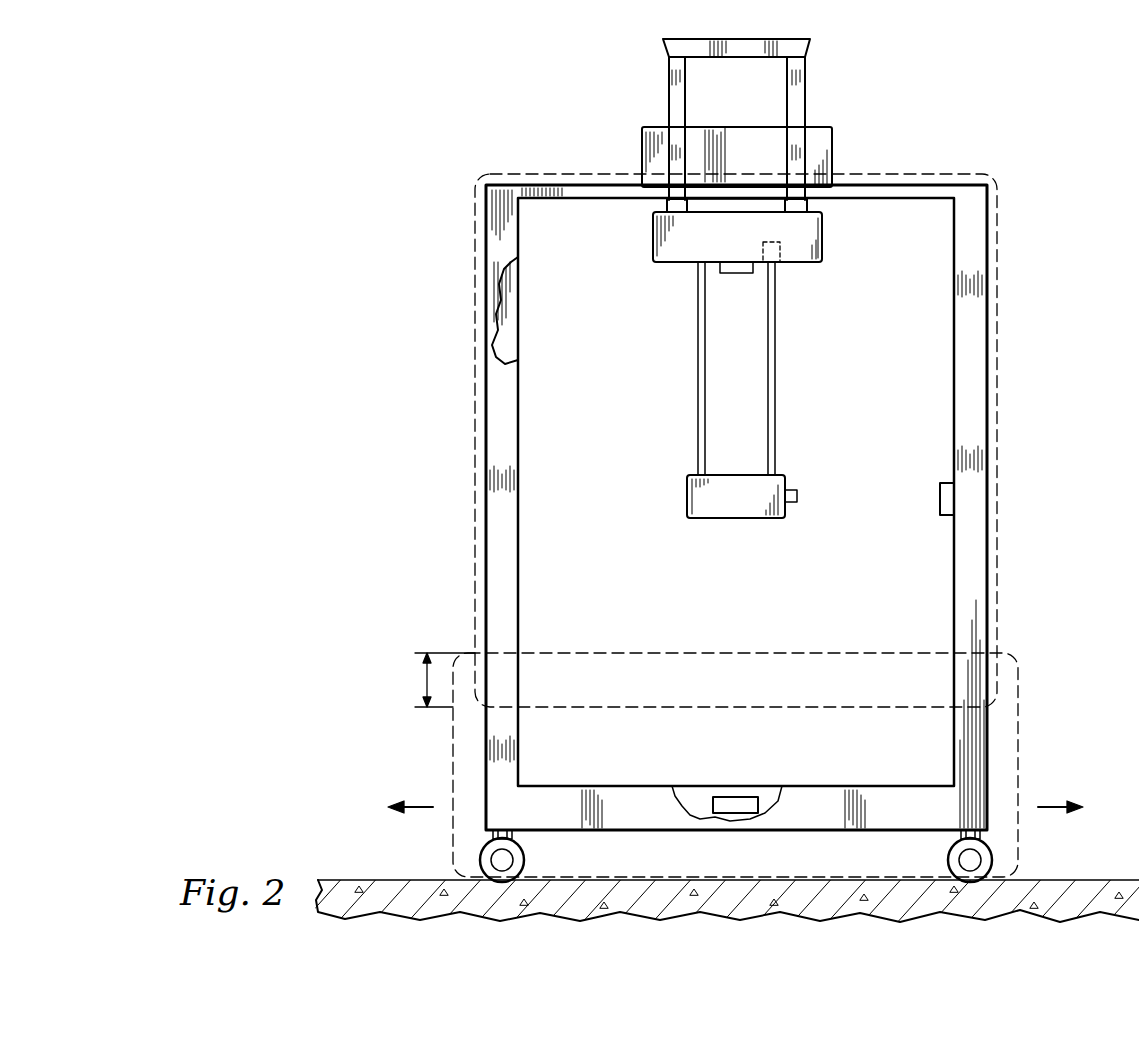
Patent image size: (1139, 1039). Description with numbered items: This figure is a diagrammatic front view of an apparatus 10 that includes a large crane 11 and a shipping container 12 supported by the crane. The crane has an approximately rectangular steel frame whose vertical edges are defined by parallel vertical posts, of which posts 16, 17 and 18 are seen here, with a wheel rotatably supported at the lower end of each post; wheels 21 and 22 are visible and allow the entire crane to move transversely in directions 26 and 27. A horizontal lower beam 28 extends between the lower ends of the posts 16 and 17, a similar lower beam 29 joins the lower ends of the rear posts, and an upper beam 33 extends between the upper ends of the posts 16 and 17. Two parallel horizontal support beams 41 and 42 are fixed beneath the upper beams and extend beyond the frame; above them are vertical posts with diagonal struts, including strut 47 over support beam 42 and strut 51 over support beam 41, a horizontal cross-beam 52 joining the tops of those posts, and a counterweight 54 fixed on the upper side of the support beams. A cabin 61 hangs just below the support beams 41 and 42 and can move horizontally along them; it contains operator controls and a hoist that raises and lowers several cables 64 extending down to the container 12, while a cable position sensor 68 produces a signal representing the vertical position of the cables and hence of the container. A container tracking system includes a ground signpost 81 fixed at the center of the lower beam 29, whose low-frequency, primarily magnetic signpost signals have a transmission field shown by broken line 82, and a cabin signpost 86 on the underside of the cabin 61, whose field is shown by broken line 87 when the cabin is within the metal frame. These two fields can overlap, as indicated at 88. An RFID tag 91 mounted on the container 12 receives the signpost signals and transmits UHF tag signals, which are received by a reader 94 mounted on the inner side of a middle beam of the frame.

The apparatus 10 is at (1075, 131).
The crane 11 is at (549, 159).
The container 12 is at (687, 496).
The vertical post 16 is at (519, 437).
The vertical post 17 is at (953, 440).
The vertical post 18 is at (513, 310).
The wheel 21 is at (525, 858).
The wheel 22 is at (948, 858).
The direction 26 is at (420, 809).
The direction 27 is at (1054, 809).
The horizontal lower beam 28 is at (625, 786).
The horizontal lower beam 29 is at (766, 790).
The upper beam 33 is at (905, 198).
The support beam 41 is at (667, 205).
The support beam 42 is at (808, 205).
The diagonal strut 47 is at (805, 96).
The diagonal strut 51 is at (668, 95).
The horizontal cross-beam 52 is at (738, 57).
The counterweight 54 is at (642, 146).
The cabin 61 is at (653, 240).
The cables 64 is at (775, 381).
The cable position sensor 68 is at (763, 245).
The ground signpost 81 is at (727, 797).
The transmission range of the ground signpost signals 82 is at (1019, 721).
The cabin signpost 86 is at (736, 274).
The transmission range of the cabin signpost signals 87 is at (999, 366).
The overlap of the fields 88 is at (425, 680).
The RFID tag 91 is at (797, 497).
The reader 94 is at (940, 505).